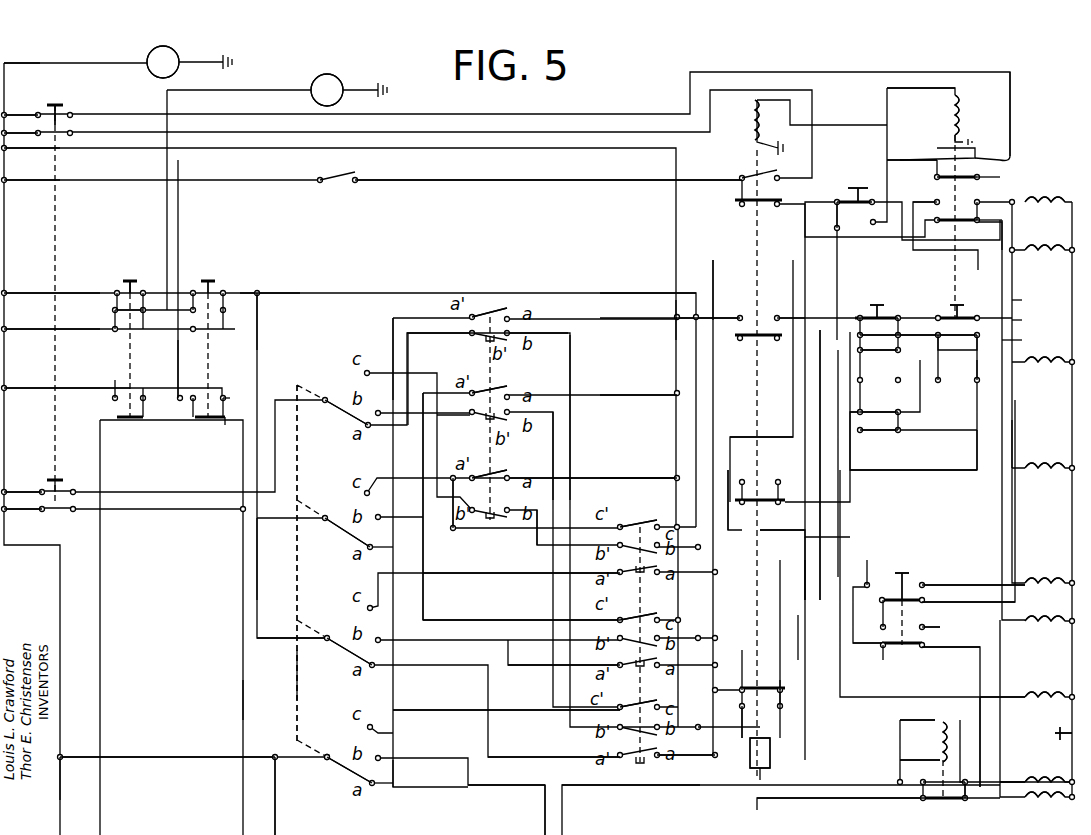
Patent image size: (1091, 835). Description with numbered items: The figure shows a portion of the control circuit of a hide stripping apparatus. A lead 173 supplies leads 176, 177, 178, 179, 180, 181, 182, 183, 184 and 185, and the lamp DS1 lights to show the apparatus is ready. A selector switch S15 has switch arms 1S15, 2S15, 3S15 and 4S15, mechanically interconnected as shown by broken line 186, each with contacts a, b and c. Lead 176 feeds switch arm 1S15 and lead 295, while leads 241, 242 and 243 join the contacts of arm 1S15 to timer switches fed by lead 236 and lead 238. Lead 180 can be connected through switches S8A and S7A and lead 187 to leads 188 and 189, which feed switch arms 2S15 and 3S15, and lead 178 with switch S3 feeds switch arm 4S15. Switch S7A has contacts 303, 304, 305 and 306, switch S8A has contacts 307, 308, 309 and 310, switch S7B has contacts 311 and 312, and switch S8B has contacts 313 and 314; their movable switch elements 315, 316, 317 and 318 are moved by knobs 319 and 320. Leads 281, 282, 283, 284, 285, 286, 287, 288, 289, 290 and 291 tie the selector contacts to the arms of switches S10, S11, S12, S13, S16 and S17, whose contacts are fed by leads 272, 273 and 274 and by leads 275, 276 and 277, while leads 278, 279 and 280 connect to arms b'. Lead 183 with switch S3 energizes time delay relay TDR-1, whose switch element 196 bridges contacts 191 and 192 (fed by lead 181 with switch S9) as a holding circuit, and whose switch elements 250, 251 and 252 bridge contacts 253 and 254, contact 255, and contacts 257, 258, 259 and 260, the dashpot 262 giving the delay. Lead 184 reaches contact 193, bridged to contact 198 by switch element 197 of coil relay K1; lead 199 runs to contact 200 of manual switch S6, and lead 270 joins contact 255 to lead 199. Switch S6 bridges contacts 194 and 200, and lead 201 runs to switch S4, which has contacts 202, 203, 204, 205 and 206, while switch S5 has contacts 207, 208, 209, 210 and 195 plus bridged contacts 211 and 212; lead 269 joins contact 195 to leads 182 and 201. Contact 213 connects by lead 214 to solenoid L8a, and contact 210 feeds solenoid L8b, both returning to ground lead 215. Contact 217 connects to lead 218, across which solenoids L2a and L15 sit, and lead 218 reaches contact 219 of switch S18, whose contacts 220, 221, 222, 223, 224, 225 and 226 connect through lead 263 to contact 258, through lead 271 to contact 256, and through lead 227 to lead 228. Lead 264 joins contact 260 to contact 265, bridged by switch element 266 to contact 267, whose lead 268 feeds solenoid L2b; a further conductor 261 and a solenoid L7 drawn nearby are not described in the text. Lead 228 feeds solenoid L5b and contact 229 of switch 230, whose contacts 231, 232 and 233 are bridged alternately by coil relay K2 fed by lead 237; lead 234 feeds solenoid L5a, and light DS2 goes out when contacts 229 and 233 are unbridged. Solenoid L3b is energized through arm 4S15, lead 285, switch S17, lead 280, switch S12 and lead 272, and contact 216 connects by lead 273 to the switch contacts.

The conductor 185 is at (27, 63).
The indicator lamp DS1 is at (160, 48).
The indicator lamp DS2 is at (325, 70).
The conductor 184 is at (14, 115).
The conductor 183 is at (22, 133).
The power switch S3 is at (72, 101).
The conductor 182 is at (42, 148).
The conductor 181 is at (42, 180).
The switch S9 is at (352, 180).
The switch section S8A is at (118, 280).
The contact 308 is at (148, 290).
The contact 303 is at (195, 290).
The contact 315 is at (208, 280).
The contact 319 is at (225, 290).
The switch section S7A is at (215, 280).
The conductor 304 is at (243, 293).
The conductor 180 is at (50, 293).
The contact 307 is at (117, 292).
The switch arm 320 is at (130, 281).
The contact 317 is at (115, 310).
The contact 310 is at (115, 315).
The conductor 179 is at (46, 329).
The contact 309 is at (143, 312).
The conductor 306 is at (128, 355).
The contact 305 is at (227, 312).
The contact 313 is at (115, 400).
The contact 314 is at (136, 388).
The contact 312 is at (225, 410).
The contact 318 is at (117, 420).
The contact 311 is at (200, 420).
The contact 316 is at (225, 420).
The switch section S8B is at (143, 422).
The switch section S7B is at (200, 440).
The conductor 178 is at (42, 490).
The conductor 177 is at (45, 512).
The conductor 187 is at (260, 315).
The conductor 287 is at (393, 318).
The switch section 4S15 is at (325, 398).
The switch section 3S15 is at (325, 516).
The conductor 189 is at (290, 520).
The switch section 2S15 is at (327, 636).
The conductor 188 is at (286, 638).
The conductor 186 is at (297, 688).
The switch section 1S15 is at (327, 755).
The selector switch S15 is at (336, 766).
The conductor 295 is at (275, 800).
The conductor 173 is at (60, 755).
The conductor 176 is at (162, 757).
The conductor 281 is at (412, 472).
The conductor 285 is at (410, 372).
The conductor 286 is at (440, 413).
The conductor 282 is at (470, 535).
The conductor 278 is at (537, 542).
The conductor 283 is at (425, 606).
The conductor 290 is at (527, 575).
The conductor 291 is at (548, 620).
The conductor 284 is at (408, 695).
The conductor 289 is at (545, 668).
The conductor 288 is at (492, 755).
The conductor 241 is at (395, 793).
The conductor 242 is at (472, 800).
The conductor 243 is at (538, 785).
The conductor 236 is at (600, 785).
The conductor 238 is at (757, 805).
The switch S17 is at (491, 305).
The switch S16 is at (511, 390).
The switch S13 is at (490, 475).
The switch S10 is at (622, 511).
The switch S11 is at (620, 612).
The switch S12 is at (630, 702).
The conductor 273 is at (705, 292).
The conductor 274 is at (680, 304).
The conductor 275 is at (655, 328).
The conductor 276 is at (658, 395).
The conductor 277 is at (605, 478).
The conductor 279 is at (553, 435).
The conductor 280 is at (570, 465).
The relay coil 262 is at (770, 748).
The conductor 272 is at (715, 755).
The contact 253 is at (700, 280).
The contact 254 is at (778, 300).
The contact 250 is at (760, 340).
The conductor 270 is at (778, 415).
The contact 256 is at (785, 480).
The conductor 255 is at (745, 504).
The conductor 251 is at (778, 506).
The conductor 271 is at (812, 543).
The conductor 261 is at (805, 580).
The conductor 263 is at (805, 610).
The conductor 257 is at (745, 660).
The conductor 258 is at (778, 675).
The contact 259 is at (748, 688).
The conductor 252 is at (738, 728).
The contact 260 is at (785, 690).
The conductor 264 is at (820, 690).
The time delay relay TDR-1 is at (752, 100).
The conductor 192 is at (735, 178).
The contact 196 is at (745, 205).
The contact 191 is at (778, 182).
The conductor 199 is at (886, 100).
The conductor 198 is at (935, 158).
The relay K1 is at (962, 125).
The conductor 193 is at (1005, 160).
The switch S6 is at (875, 186).
The contact 194 is at (833, 228).
The contact 200 is at (937, 177).
The contact 216 is at (935, 202).
The contact 217 is at (985, 193).
The conductor 197 is at (978, 178).
The solenoid coil L2a is at (1045, 200).
The conductor 266 is at (1005, 220).
The conductor 267 is at (1002, 235).
The contact 265 is at (937, 224).
The contact 201 is at (845, 290).
The contact 202 is at (860, 315).
The contact 203 is at (890, 300).
The contact 204 is at (898, 316).
The switch arm 207 is at (945, 303).
The solenoid coil L15 is at (1032, 258).
The conductor 269 is at (1003, 305).
The conductor 208 is at (1003, 324).
The conductor 195 is at (1002, 345).
The conductor 212 is at (905, 338).
The contact 211 is at (942, 336).
The contact 210 is at (982, 338).
The solenoid coil L8b is at (1028, 365).
The conductor 213 is at (855, 412).
The contact 205 is at (868, 410).
The switch S5 is at (942, 375).
The contact 206 is at (898, 415).
The contact 209 is at (938, 380).
The conductor 218 is at (1012, 440).
The switch S4 is at (884, 432).
The conductor 214 is at (858, 472).
The conductor 268 is at (980, 497).
The solenoid coil L8a is at (1028, 475).
The conductor 221 is at (880, 580).
The conductor 220 is at (925, 583).
The contact 222 is at (883, 600).
The contact 219 is at (925, 602).
The contact 226 is at (928, 628).
The contact 223 is at (882, 640).
The conductor 224 is at (882, 650).
The switch S18 is at (905, 656).
The contact 225 is at (925, 650).
The conductor 227 is at (982, 697).
The solenoid coil L7 is at (1030, 578).
The solenoid coil L2b is at (1028, 625).
The solenoid coil L3b is at (1030, 696).
The conductor 230 is at (928, 714).
The conductor 229 is at (975, 760).
The ground connection 215 is at (1060, 726).
The relay K2 is at (935, 735).
The conductor 237 is at (905, 764).
The solenoid coil L5a is at (1025, 778).
The solenoid coil L5b is at (1058, 785).
The conductor 228 is at (1010, 776).
The contact 233 is at (922, 784).
The contact 234 is at (1010, 790).
The contact 232 is at (920, 800).
The contact 231 is at (965, 802).